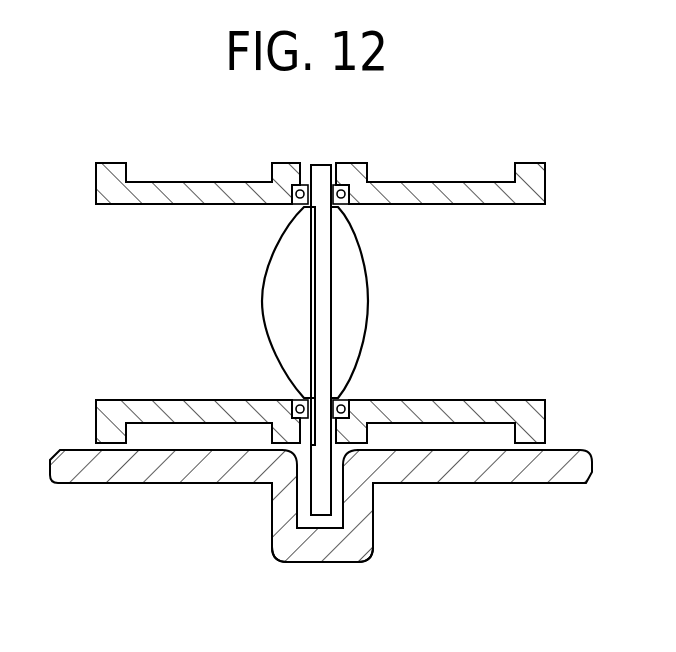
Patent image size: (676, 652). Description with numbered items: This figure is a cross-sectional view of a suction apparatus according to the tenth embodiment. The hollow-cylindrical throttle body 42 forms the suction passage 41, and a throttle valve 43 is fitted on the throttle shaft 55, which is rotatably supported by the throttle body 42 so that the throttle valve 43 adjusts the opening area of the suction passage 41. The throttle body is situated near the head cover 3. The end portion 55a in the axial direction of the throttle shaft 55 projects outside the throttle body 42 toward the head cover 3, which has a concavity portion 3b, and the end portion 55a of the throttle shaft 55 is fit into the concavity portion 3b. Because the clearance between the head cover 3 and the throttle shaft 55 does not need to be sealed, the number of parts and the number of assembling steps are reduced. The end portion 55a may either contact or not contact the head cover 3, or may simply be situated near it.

The head cover 3 is at (541, 481).
The concavity portion 3b is at (332, 563).
The suction passage 41 is at (168, 222).
The throttle body 42 is at (433, 192).
The throttle valve 43 is at (286, 245).
The throttle shaft 55 is at (323, 312).
The end portion 55a is at (325, 512).